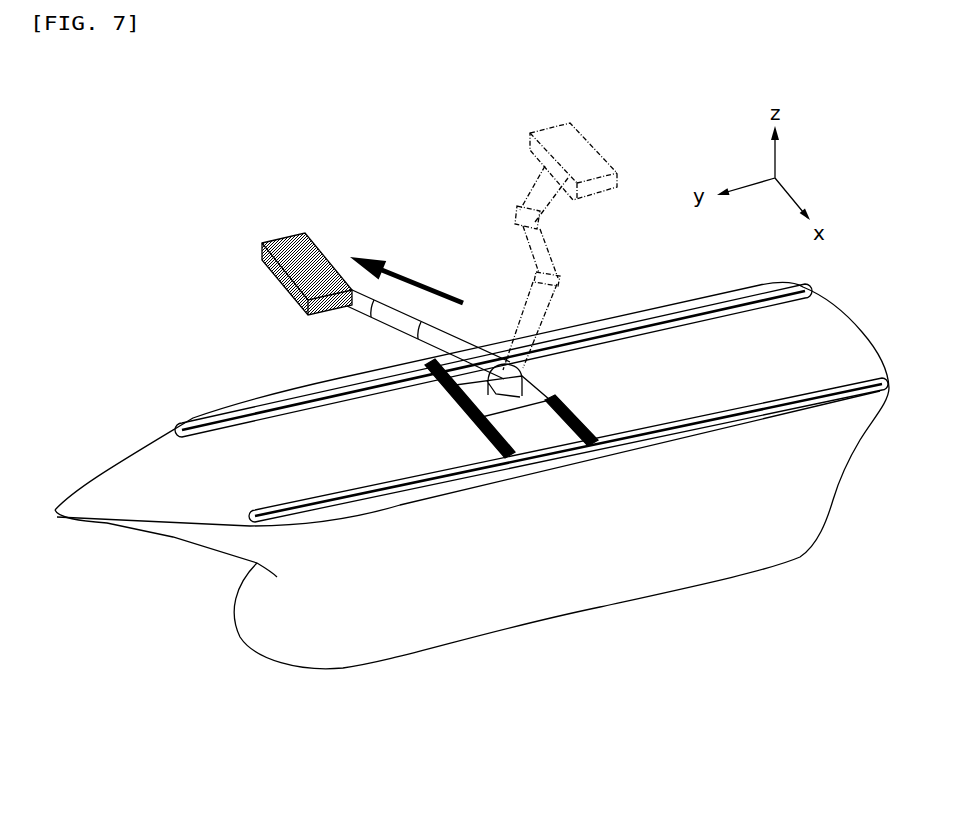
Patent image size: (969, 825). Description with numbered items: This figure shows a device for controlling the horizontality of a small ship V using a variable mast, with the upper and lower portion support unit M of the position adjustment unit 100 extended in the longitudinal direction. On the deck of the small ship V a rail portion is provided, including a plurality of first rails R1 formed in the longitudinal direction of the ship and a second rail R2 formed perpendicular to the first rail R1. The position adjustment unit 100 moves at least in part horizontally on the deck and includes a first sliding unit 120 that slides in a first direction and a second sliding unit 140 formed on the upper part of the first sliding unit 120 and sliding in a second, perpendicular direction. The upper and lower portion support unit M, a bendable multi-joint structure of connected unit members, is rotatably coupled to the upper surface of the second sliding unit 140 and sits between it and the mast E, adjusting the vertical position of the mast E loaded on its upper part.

The mast E is at (293, 243).
The upper and lower portion support unit M is at (388, 323).
The first rail R1 is at (250, 407).
The second rail R2 is at (585, 422).
The small ship V is at (740, 558).
The position adjustment unit 100 is at (511, 560).
The first sliding unit 120 is at (538, 440).
The second sliding unit 140 is at (465, 393).